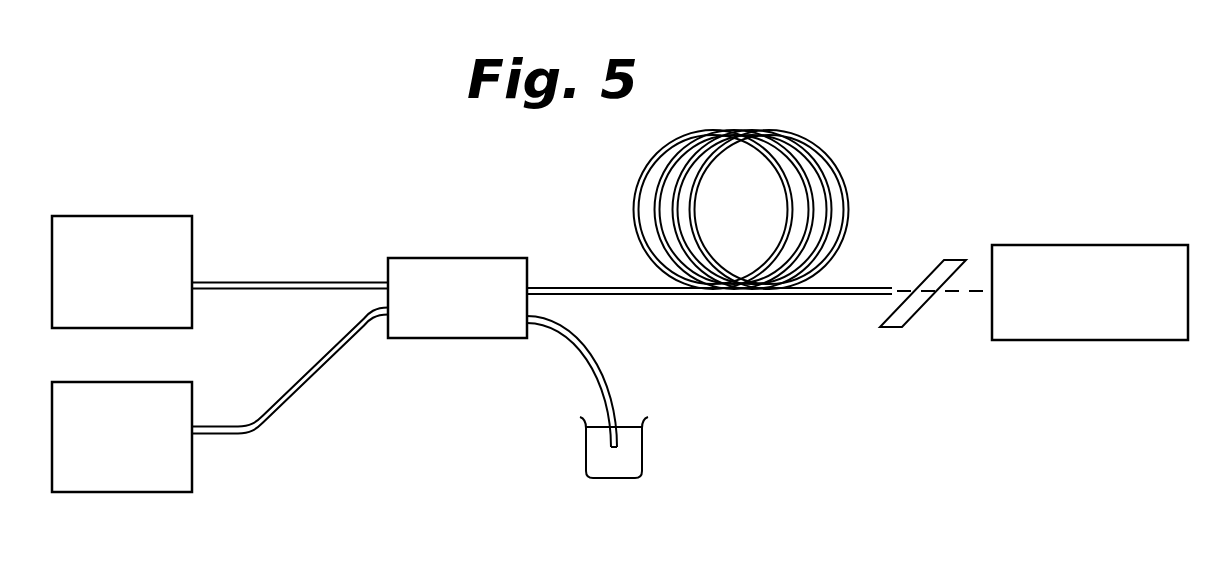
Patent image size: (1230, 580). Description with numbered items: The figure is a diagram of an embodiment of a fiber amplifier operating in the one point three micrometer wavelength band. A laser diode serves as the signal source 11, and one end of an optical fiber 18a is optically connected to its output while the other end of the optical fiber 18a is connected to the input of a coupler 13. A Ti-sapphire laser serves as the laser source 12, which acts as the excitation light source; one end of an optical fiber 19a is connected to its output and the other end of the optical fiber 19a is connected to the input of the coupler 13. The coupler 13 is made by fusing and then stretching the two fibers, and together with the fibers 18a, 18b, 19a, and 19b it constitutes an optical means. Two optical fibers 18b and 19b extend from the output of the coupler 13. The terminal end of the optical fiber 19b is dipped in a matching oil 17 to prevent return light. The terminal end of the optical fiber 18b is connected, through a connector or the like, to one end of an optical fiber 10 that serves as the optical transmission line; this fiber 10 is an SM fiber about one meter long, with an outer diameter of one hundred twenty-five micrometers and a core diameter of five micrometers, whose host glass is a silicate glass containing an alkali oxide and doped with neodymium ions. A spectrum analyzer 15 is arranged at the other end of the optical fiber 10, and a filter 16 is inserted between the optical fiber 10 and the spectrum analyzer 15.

The optical fiber 10 is at (712, 297).
The signal source 11 is at (132, 215).
The laser source 12 is at (115, 493).
The coupler 13 is at (467, 258).
The spectrum analyzer 15 is at (1062, 342).
The filter 16 is at (900, 323).
The matching oil 17 is at (633, 447).
The optical fiber 18a is at (305, 280).
The optical fiber 18b is at (562, 284).
The optical fiber 19a is at (305, 385).
The optical fiber 19b is at (580, 363).